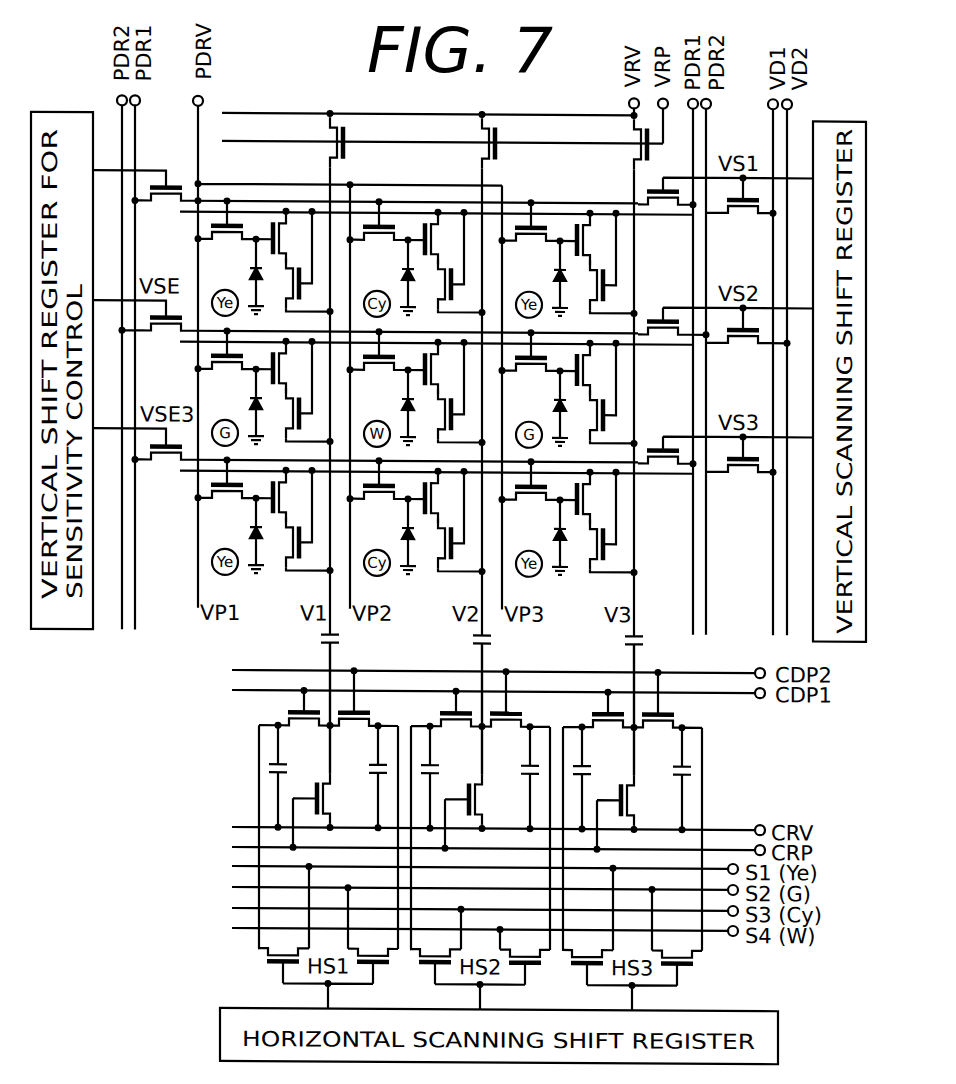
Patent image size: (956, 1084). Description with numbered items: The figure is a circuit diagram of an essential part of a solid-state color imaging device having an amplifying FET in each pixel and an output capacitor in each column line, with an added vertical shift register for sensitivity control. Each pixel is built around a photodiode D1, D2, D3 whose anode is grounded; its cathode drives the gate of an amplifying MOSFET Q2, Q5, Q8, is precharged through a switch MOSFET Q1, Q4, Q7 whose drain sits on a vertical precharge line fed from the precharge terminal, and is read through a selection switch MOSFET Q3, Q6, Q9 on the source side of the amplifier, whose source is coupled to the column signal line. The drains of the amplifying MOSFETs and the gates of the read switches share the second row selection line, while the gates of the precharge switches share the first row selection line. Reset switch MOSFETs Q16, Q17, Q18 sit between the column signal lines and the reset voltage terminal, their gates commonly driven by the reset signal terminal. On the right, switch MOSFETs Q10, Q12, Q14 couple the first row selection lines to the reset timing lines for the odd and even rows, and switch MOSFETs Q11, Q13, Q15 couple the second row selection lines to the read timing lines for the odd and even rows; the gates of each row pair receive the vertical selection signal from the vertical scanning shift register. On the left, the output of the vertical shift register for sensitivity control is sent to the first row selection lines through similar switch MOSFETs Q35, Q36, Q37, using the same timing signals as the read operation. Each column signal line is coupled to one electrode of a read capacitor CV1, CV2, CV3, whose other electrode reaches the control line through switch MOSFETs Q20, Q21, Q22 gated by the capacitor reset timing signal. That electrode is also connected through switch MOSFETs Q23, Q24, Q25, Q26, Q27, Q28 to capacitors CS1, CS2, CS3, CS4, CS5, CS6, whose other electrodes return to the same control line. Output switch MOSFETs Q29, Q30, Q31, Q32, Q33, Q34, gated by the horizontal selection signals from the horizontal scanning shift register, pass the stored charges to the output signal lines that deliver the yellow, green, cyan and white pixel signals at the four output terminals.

The switch MOSFET for precharge Q1 is at (227, 246).
The amplifying MOSFET Q2 is at (292, 238).
The switch MOSFET for selection Q3 is at (282, 283).
The switch MOSFET for precharge Q4 is at (379, 247).
The amplifying MOSFET Q5 is at (444, 239).
The switch MOSFET for read operation Q6 is at (434, 284).
The switch MOSFET for precharge Q7 is at (531, 248).
The amplifying MOSFET Q8 is at (596, 240).
The switch MOSFET for read operation Q9 is at (586, 285).
The photodiode D1 is at (244, 290).
The photodiode D2 is at (396, 291).
The photodiode D3 is at (548, 292).
The switch MOSFET Q10 is at (663, 219).
The switch MOSFET Q11 is at (743, 224).
The switch MOSFET Q12 is at (663, 350).
The switch MOSFET Q13 is at (743, 355).
The switch MOSFET Q14 is at (663, 478).
The switch MOSFET Q15 is at (743, 483).
The switch MOSFET for reset Q16 is at (315, 145).
The switch MOSFET for reset Q17 is at (467, 146).
The switch MOSFET for reset Q18 is at (618, 147).
The switch MOSFET Q20 is at (346, 799).
The switch MOSFET Q21 is at (498, 799).
The switch MOSFET Q22 is at (650, 800).
The switch MOSFET Q23 is at (304, 734).
The switch MOSFET Q24 is at (354, 735).
The switch MOSFET Q25 is at (456, 735).
The switch MOSFET Q26 is at (506, 735).
The switch MOSFET Q27 is at (608, 736).
The switch MOSFET Q28 is at (658, 736).
The switch MOSFET Q29 is at (284, 944).
The switch MOSFET Q30 is at (373, 945).
The switch MOSFET Q31 is at (436, 945).
The switch MOSFET Q32 is at (525, 946).
The output switch MOSFET Q33 is at (588, 946).
The output switch MOSFET Q34 is at (677, 947).
The switch MOSFET Q35 is at (166, 214).
The switch MOSFET Q36 is at (166, 344).
The switch MOSFET Q37 is at (166, 472).
The capacitor for read operation CV1 is at (304, 647).
The capacitor for read operation CV2 is at (456, 648).
The capacitor for read operation CV3 is at (608, 649).
The capacitor CS1 is at (298, 771).
The capacitor CS2 is at (363, 772).
The capacitor CS3 is at (450, 772).
The capacitor CS4 is at (515, 773).
The capacitor for output CS5 is at (602, 773).
The capacitor for output CS6 is at (667, 773).